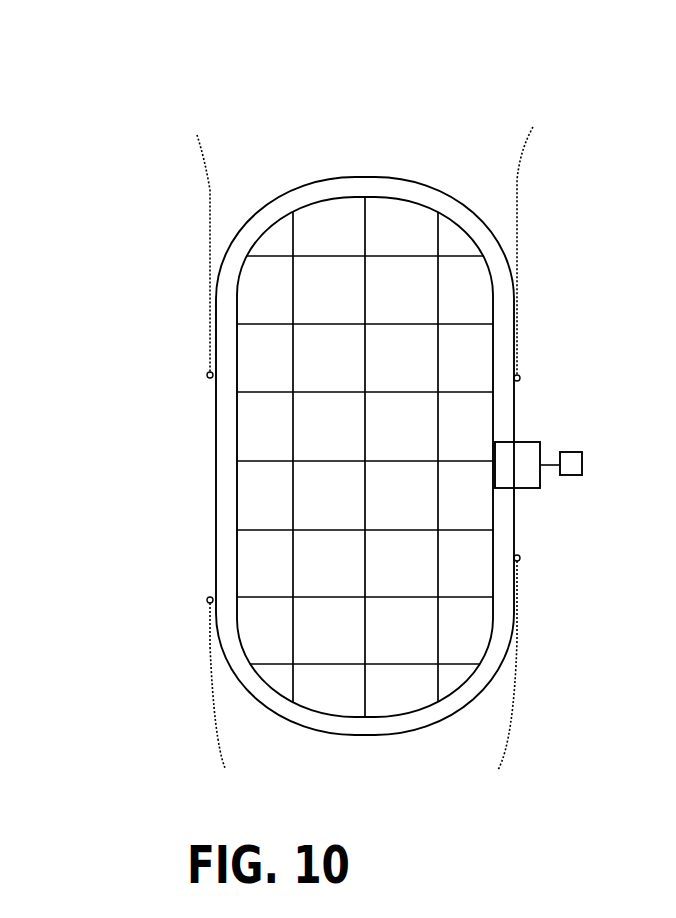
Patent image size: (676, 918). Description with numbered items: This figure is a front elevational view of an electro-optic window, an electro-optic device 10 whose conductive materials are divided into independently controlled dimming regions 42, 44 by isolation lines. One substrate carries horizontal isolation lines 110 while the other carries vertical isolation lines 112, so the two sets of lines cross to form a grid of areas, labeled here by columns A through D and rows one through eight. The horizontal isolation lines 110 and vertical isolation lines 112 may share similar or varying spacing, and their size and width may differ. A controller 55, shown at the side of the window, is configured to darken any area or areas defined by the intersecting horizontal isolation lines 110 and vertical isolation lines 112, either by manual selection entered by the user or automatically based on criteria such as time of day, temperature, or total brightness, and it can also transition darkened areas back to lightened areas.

The electro-optic device 10 is at (597, 165).
The dimming region 44 is at (540, 360).
The dimming region 42 is at (537, 527).
The controller 55 is at (570, 452).
The horizontal isolation lines 110 is at (270, 390).
The vertical isolation lines 112 is at (437, 240).